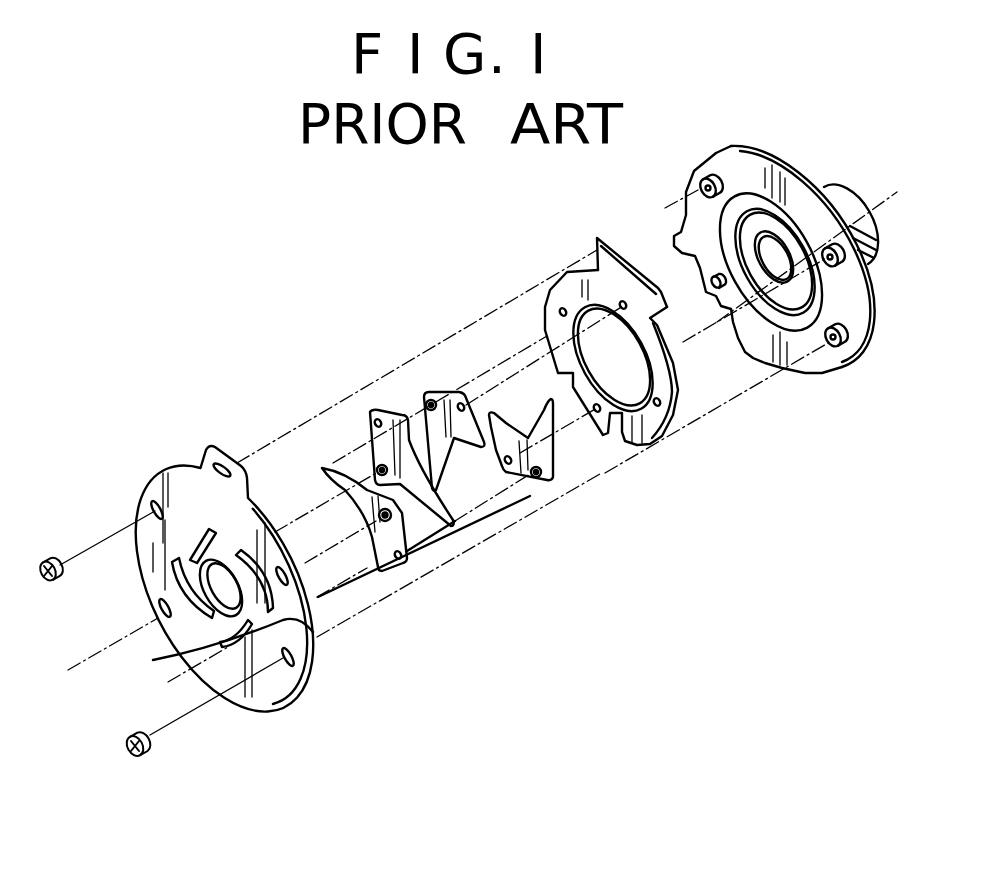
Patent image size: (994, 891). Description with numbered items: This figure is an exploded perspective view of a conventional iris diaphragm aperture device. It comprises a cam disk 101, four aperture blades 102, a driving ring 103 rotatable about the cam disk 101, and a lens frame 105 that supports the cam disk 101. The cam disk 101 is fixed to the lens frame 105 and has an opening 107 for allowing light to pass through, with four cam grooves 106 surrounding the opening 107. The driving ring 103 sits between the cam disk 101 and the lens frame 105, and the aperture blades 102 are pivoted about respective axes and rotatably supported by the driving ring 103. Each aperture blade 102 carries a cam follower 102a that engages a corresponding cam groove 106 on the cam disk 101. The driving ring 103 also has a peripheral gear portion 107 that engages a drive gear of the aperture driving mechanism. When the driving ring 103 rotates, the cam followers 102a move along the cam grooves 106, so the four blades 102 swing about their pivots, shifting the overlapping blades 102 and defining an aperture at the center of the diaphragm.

The cam disk 101 is at (277, 688).
The aperture blades 102 is at (558, 518).
The cam follower 102a is at (384, 521).
The driving ring 103 is at (655, 428).
The lens frame 105 is at (817, 358).
The cam grooves 106 is at (224, 641).
The opening 107 is at (314, 634).